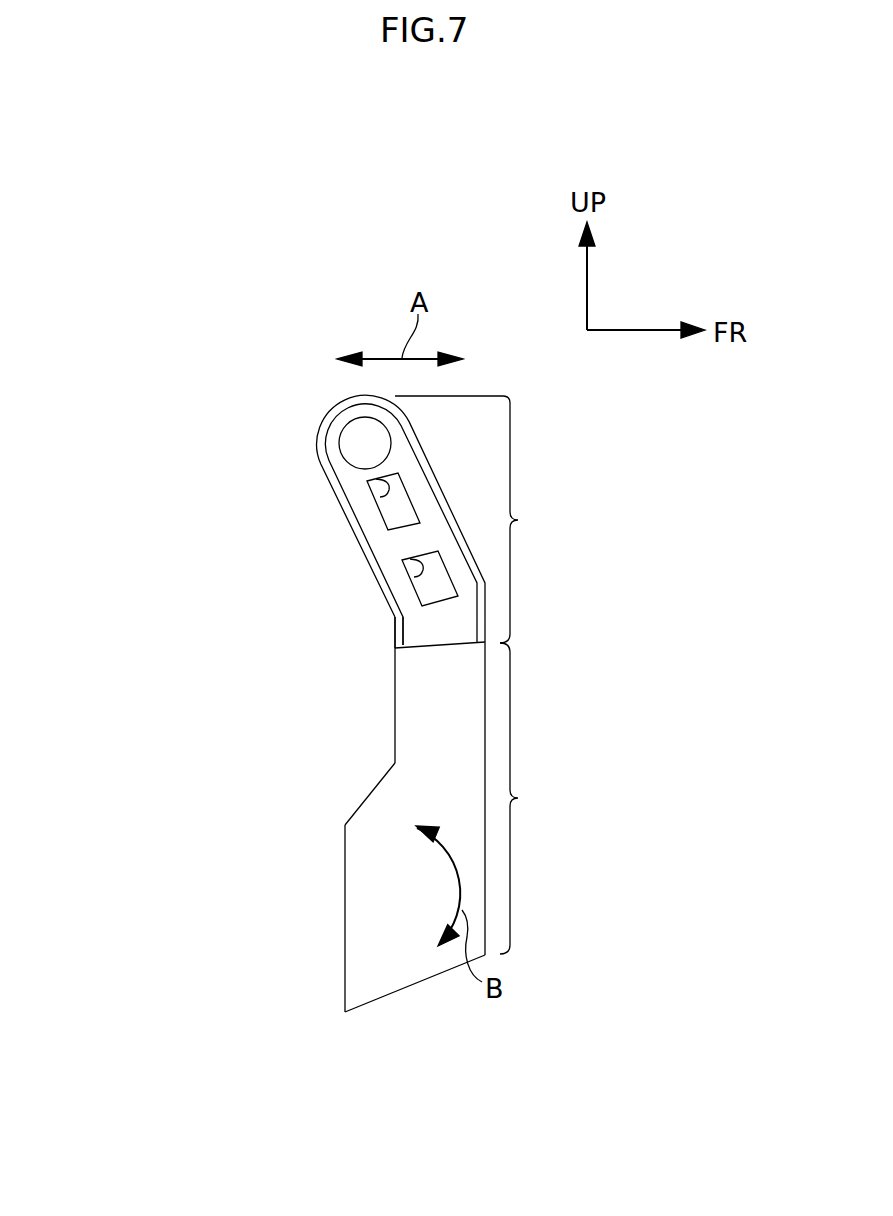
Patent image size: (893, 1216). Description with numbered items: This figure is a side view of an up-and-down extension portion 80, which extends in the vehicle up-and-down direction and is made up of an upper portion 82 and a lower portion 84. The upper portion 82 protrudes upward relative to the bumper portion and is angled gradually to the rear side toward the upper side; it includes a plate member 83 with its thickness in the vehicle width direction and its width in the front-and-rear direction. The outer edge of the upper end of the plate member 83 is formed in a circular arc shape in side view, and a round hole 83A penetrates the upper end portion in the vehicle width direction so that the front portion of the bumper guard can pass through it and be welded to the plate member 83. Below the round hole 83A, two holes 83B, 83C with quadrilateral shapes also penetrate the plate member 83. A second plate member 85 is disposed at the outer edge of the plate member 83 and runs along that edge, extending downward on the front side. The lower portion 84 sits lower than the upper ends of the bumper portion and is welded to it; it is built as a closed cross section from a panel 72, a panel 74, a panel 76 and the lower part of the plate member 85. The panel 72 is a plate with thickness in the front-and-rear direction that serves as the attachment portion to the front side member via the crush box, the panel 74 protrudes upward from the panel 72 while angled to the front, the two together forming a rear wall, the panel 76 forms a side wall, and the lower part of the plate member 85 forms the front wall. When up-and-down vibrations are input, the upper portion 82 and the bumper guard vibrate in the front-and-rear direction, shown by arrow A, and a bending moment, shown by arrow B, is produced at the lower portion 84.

The up-and-down extension portion 80 is at (113, 383).
The upper portion 82 is at (477, 519).
The lower portion 84 is at (477, 798).
The plate member 83 is at (355, 473).
The round hole 83A is at (365, 420).
The hole 83B is at (385, 488).
The hole 83C is at (410, 573).
The plate member 85 is at (386, 595).
The panel 74 is at (368, 800).
The panel 72 is at (343, 908).
The panel 76 is at (413, 960).